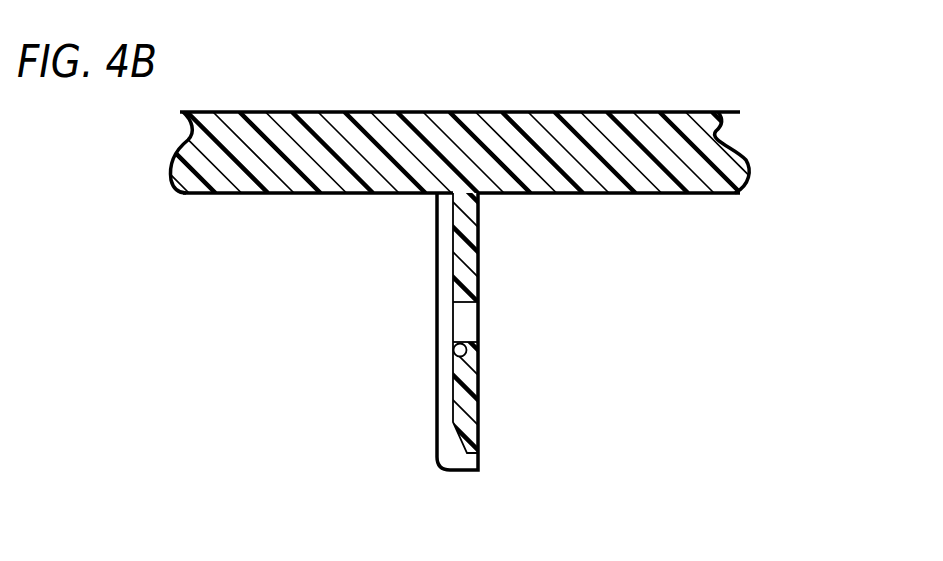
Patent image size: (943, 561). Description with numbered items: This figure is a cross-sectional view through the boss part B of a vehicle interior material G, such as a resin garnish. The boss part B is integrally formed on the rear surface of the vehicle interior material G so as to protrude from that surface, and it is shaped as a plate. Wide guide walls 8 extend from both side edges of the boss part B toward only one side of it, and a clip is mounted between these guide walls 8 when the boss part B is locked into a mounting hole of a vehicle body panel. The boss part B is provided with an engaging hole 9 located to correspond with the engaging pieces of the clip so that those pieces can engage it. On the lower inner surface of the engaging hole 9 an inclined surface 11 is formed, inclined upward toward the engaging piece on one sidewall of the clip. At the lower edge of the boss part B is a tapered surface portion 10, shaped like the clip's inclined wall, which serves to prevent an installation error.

The vehicle interior material G is at (656, 133).
The guide walls 8 is at (444, 245).
The engaging hole 9 is at (468, 312).
The tapered surface portion 10 is at (463, 437).
The inclined surface 11 is at (457, 352).
The boss part B is at (368, 442).